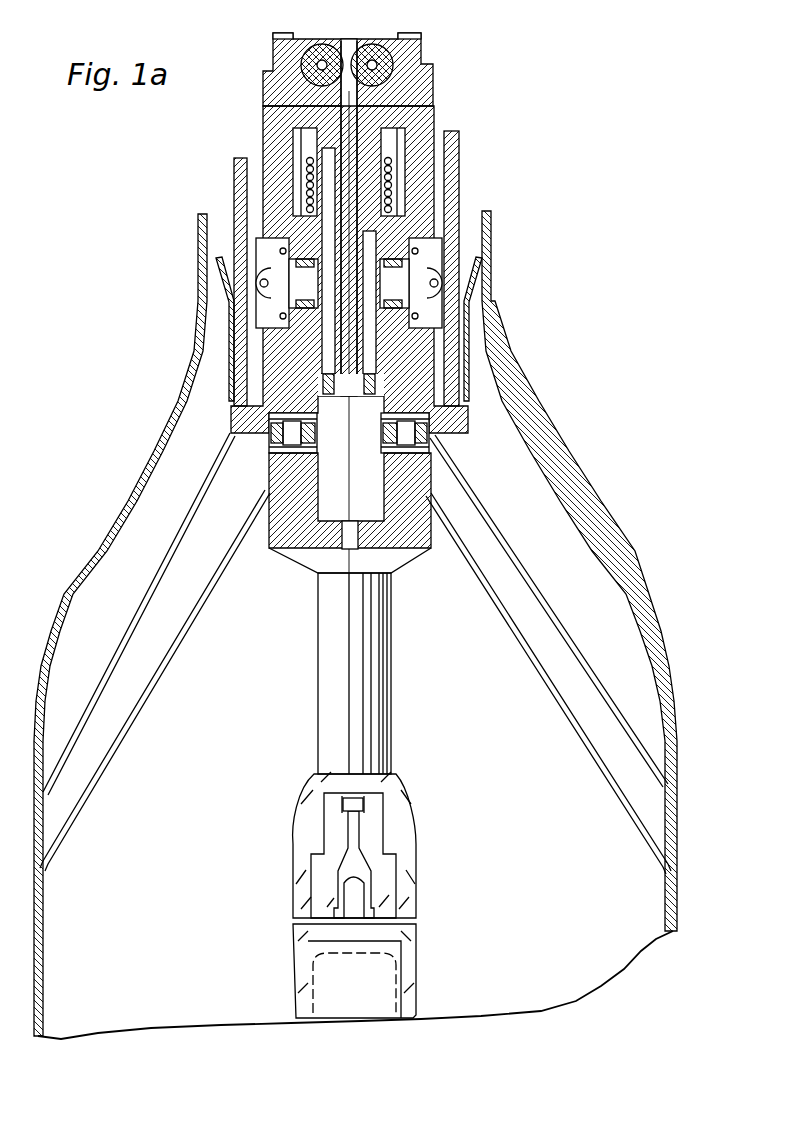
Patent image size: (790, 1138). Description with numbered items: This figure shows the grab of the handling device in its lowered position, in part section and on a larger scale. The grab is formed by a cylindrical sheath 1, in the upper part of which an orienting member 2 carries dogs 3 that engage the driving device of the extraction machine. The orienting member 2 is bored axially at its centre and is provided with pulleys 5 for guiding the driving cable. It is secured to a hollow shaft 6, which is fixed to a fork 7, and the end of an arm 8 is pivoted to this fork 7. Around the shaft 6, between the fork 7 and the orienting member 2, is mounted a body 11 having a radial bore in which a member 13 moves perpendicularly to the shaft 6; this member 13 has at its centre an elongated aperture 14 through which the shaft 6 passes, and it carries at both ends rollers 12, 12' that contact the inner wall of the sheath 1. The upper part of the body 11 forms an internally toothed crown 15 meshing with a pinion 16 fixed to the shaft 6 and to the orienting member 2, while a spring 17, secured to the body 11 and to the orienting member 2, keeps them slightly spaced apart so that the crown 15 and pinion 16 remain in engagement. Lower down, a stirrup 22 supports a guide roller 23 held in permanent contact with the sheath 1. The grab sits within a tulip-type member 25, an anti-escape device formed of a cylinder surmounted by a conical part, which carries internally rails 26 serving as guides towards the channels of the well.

The cylindrical sheath 1 is at (459, 182).
The orienting member 2 is at (432, 78).
The dogs 3 is at (418, 33).
The pulleys 5 is at (366, 44).
The hollow shaft 6 is at (355, 392).
The fork 7 is at (392, 482).
The arm 8 is at (379, 661).
The body 11 is at (264, 201).
The roller 12 is at (493, 329).
The roller 12' is at (203, 329).
The member 13 is at (312, 292).
The elongated aperture 14 is at (402, 292).
The internally toothed crown 15 is at (405, 160).
The pinion 16 is at (292, 158).
The spring 17 is at (392, 187).
The stirrup 22 is at (350, 866).
The guide roller 23 is at (355, 803).
The tulip-type member 25 is at (534, 443).
The rails 26 is at (177, 651).